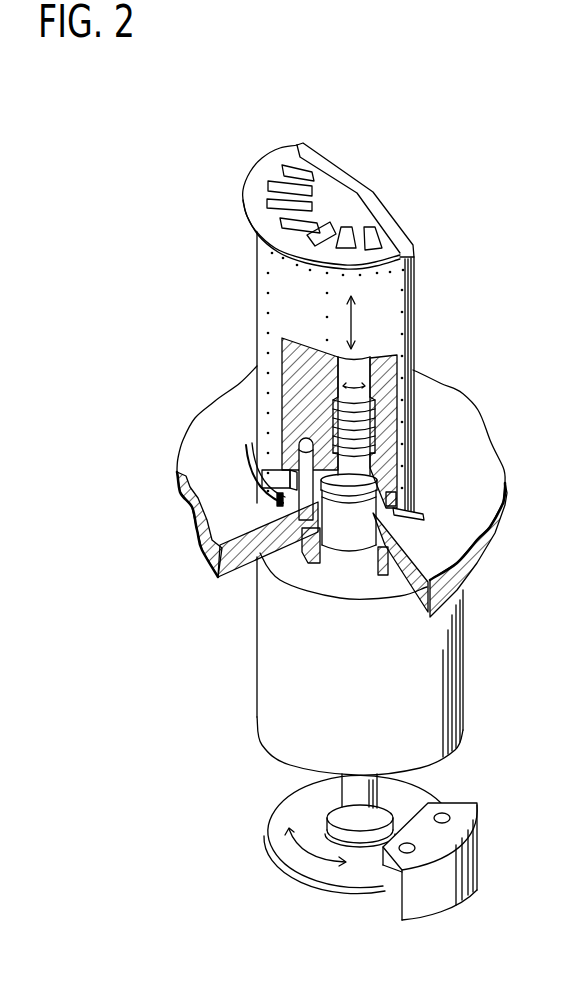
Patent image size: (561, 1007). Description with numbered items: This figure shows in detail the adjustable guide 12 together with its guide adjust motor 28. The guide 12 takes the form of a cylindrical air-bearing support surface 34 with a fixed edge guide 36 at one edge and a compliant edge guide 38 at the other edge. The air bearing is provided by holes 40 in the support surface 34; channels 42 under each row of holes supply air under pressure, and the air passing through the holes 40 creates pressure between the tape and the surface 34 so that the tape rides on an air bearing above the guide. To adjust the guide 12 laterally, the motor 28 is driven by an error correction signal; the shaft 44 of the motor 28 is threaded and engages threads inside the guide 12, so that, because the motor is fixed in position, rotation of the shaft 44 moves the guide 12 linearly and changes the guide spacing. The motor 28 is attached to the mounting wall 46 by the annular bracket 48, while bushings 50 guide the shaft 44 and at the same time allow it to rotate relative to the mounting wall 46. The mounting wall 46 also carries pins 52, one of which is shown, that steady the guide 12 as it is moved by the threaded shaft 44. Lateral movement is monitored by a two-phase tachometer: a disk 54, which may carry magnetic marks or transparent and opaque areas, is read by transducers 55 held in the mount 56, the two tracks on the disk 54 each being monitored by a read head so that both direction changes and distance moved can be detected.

The adjustable guide 12 is at (377, 205).
The guide adjust motor 28 is at (257, 683).
The cylindrical air-bearing support surface 34 is at (387, 292).
The fixed edge guide 36 is at (253, 461).
The compliant edge guide 38 is at (263, 173).
The holes 40 is at (336, 372).
The channels 42 is at (283, 484).
The shaft 44 is at (357, 365).
The mounting wall 46 is at (190, 450).
The annular bracket 48 is at (298, 551).
The bushings 50 is at (343, 508).
The pins 52 is at (302, 462).
The disk 54 is at (282, 807).
The transducers 55 is at (442, 816).
The mount 56 is at (453, 887).